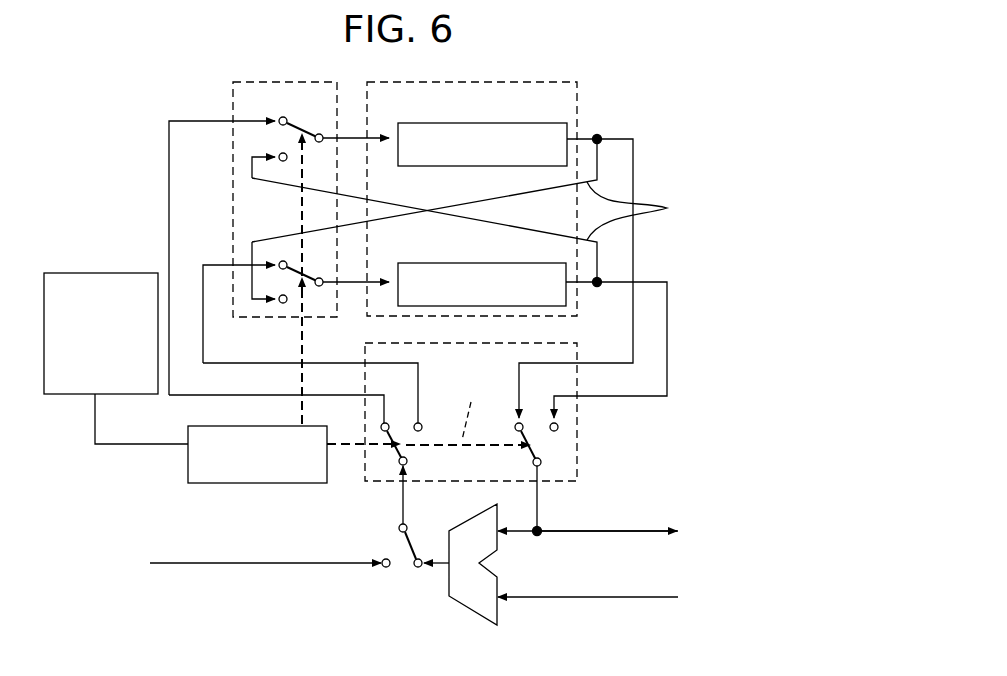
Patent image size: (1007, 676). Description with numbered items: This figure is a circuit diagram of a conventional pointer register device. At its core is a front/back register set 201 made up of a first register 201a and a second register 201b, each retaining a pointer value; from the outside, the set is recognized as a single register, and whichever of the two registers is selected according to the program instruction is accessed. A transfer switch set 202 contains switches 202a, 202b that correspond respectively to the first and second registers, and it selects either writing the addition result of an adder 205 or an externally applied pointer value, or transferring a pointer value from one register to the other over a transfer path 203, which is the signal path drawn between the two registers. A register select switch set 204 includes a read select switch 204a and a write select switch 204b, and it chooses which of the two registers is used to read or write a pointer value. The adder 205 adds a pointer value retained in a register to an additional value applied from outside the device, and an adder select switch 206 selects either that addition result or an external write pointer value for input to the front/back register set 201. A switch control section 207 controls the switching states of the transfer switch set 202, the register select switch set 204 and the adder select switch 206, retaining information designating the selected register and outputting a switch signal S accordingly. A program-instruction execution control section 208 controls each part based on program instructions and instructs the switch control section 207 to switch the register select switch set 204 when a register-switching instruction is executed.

The front/back register set 201 is at (531, 199).
The first register 201a is at (505, 167).
The second register 201b is at (505, 262).
The transfer switch set 202 is at (229, 237).
The switch 202a is at (273, 127).
The switch 202b is at (277, 262).
The transfer path 203 is at (489, 210).
The register select switch set 204 is at (493, 437).
The read select switch 204a is at (541, 463).
The write select switch 204b is at (398, 465).
The adder 205 is at (465, 605).
The adder select switch 206 is at (383, 567).
The switch control section 207 is at (188, 468).
The program-instruction execution control section 208 is at (126, 273).